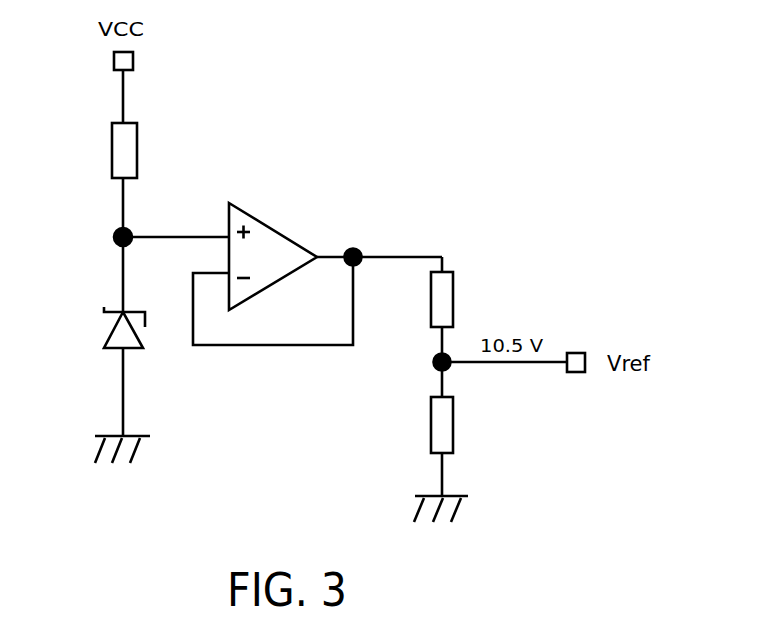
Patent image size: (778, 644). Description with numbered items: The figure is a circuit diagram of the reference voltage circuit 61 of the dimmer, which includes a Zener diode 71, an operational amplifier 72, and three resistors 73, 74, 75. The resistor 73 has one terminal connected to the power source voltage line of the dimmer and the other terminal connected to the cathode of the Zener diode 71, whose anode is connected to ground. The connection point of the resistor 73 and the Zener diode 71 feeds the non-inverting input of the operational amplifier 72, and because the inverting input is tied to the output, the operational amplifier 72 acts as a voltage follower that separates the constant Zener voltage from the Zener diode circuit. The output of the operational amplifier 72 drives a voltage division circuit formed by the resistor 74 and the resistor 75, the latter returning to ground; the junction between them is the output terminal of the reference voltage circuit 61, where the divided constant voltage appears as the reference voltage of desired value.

The reference voltage circuit 61 is at (529, 165).
The Zener diode 71 is at (104, 330).
The operational amplifier 72 is at (277, 228).
The resistor 73 is at (112, 152).
The resistor 74 is at (453, 297).
The resistor 75 is at (453, 422).